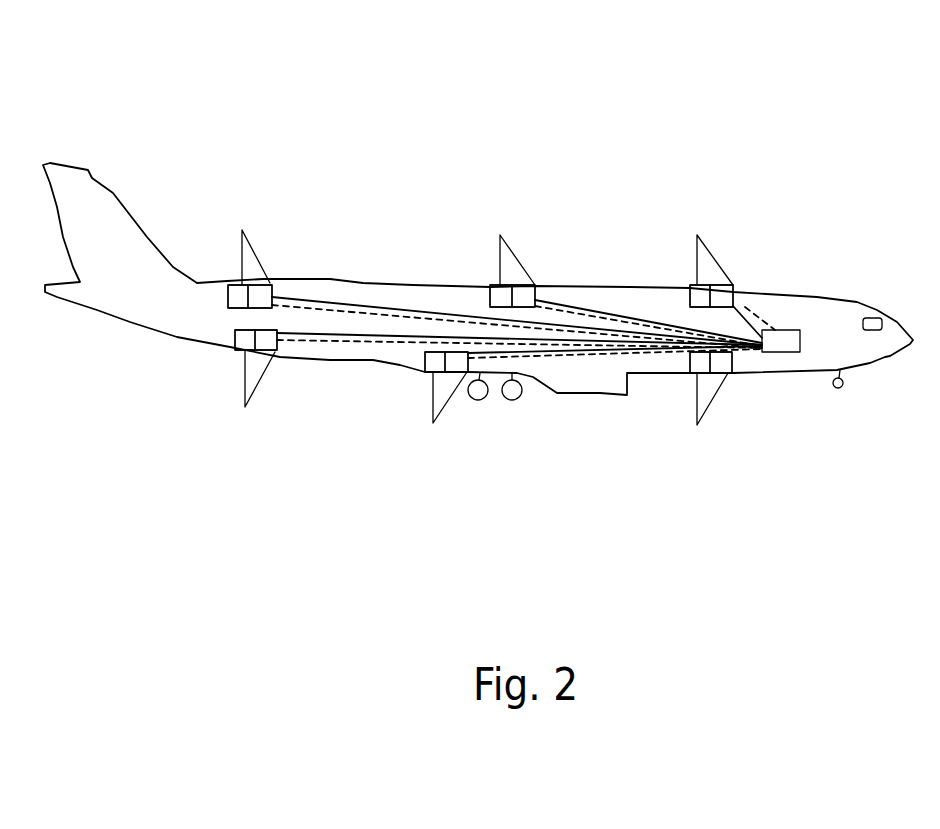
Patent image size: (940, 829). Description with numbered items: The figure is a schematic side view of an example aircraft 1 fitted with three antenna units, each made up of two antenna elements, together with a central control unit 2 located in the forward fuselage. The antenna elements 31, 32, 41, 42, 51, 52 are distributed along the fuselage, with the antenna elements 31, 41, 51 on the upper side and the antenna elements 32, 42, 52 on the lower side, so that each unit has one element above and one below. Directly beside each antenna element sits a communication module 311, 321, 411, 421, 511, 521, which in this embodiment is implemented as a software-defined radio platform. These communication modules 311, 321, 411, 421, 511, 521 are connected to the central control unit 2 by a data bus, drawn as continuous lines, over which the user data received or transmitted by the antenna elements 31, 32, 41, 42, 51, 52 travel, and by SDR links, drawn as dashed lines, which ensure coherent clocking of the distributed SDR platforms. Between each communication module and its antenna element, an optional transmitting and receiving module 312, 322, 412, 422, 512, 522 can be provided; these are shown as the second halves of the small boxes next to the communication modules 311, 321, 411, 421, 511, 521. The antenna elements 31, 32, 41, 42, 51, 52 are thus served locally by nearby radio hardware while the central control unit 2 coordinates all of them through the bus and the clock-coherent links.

The aircraft 1 is at (67, 165).
The central control unit 2 is at (802, 338).
The antenna element 31 is at (268, 220).
The communication module 311 is at (265, 292).
The transmitting and receiving module 312 is at (240, 293).
The antenna element 32 is at (251, 420).
The communication module 321 is at (268, 337).
The transmitting and receiving module 322 is at (243, 343).
The antenna element 41 is at (512, 225).
The communication module 411 is at (525, 293).
The transmitting and receiving module 412 is at (502, 293).
The antenna element 42 is at (444, 437).
The communication module 421 is at (455, 372).
The transmitting and receiving module 422 is at (432, 362).
The antenna element 51 is at (723, 225).
The communication module 511 is at (727, 293).
The transmitting and receiving module 512 is at (702, 295).
The antenna element 52 is at (712, 436).
The communication module 521 is at (722, 363).
The transmitting and receiving module 522 is at (700, 363).